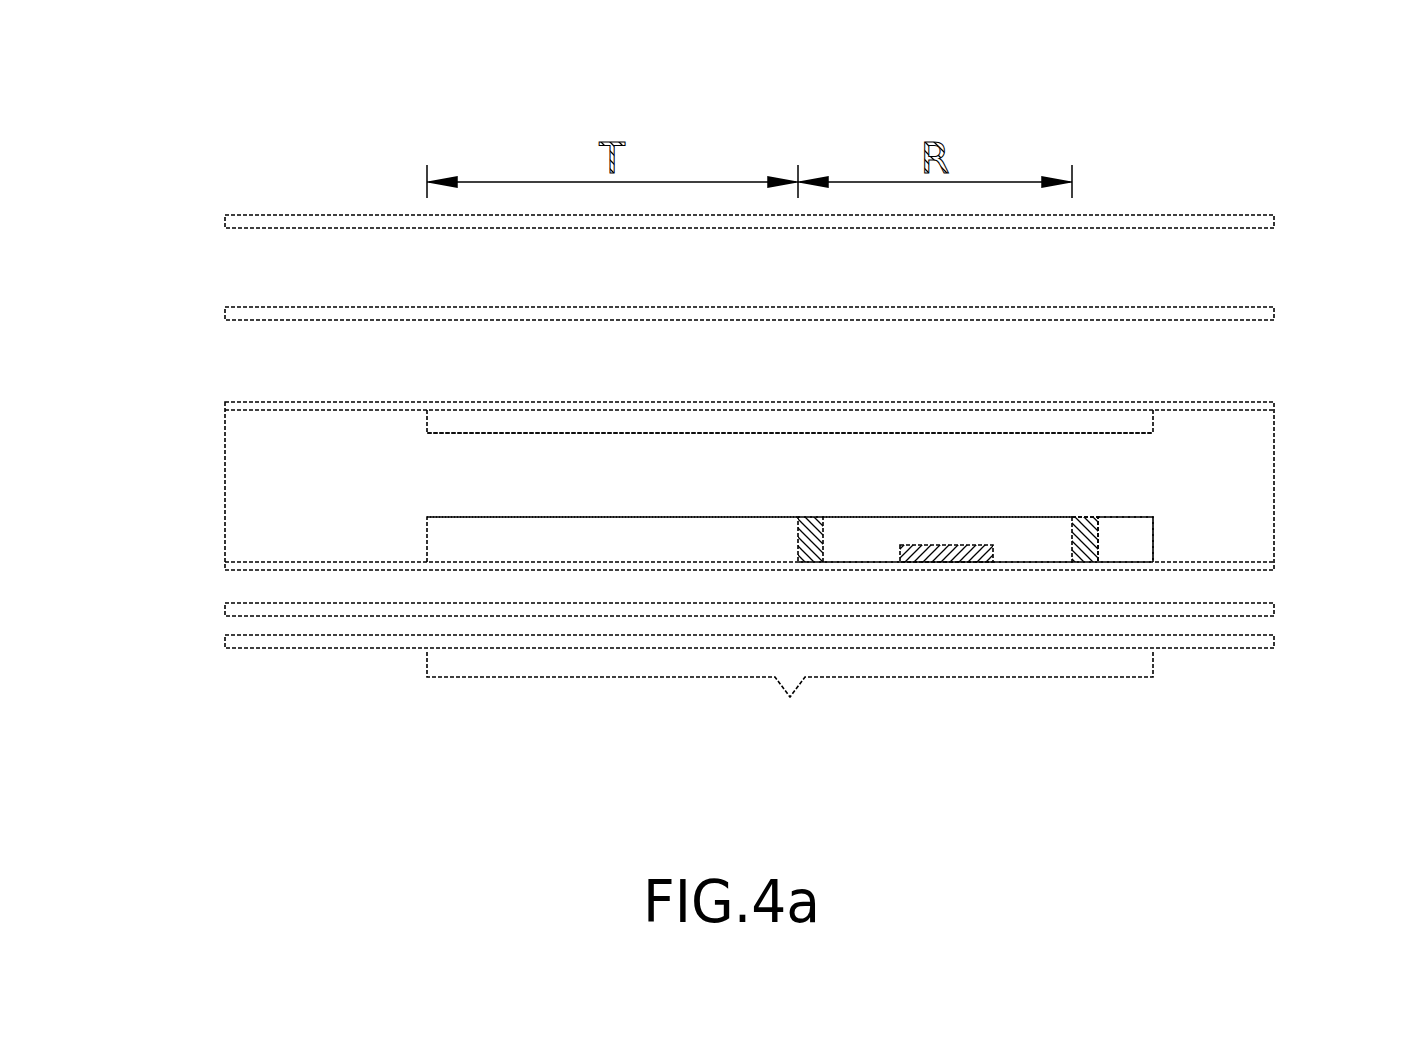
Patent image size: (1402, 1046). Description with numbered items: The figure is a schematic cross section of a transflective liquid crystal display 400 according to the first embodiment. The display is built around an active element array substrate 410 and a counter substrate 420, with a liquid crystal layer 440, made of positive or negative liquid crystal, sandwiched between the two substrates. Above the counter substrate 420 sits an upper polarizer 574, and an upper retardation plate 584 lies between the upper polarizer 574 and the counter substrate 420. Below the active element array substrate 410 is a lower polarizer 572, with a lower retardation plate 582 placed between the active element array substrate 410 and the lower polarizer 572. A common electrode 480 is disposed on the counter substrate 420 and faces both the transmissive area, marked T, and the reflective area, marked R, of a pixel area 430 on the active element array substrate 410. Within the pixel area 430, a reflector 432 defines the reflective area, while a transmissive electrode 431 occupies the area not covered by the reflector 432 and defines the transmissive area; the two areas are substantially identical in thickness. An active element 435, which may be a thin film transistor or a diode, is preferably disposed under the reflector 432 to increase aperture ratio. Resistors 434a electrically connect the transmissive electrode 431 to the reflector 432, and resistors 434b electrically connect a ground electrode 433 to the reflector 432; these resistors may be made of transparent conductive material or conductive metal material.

The transflective liquid crystal display 400 is at (113, 130).
The upper polarizer 574 is at (225, 220).
The upper retardation plate 584 is at (225, 310).
The counter substrate 420 is at (225, 405).
The common electrode 480 is at (440, 422).
The transmissive electrode 431 is at (445, 541).
The active element array substrate 410 is at (225, 567).
The resistors 434a is at (808, 520).
The active element 435 is at (953, 553).
The reflector 432 is at (1037, 527).
The resistors 434b is at (1087, 533).
The ground electrode 433 is at (1133, 528).
The liquid crystal layer 440 is at (1270, 553).
The lower retardation plate 582 is at (1274, 610).
The lower polarizer 572 is at (1274, 645).
The pixel area 430 is at (790, 690).